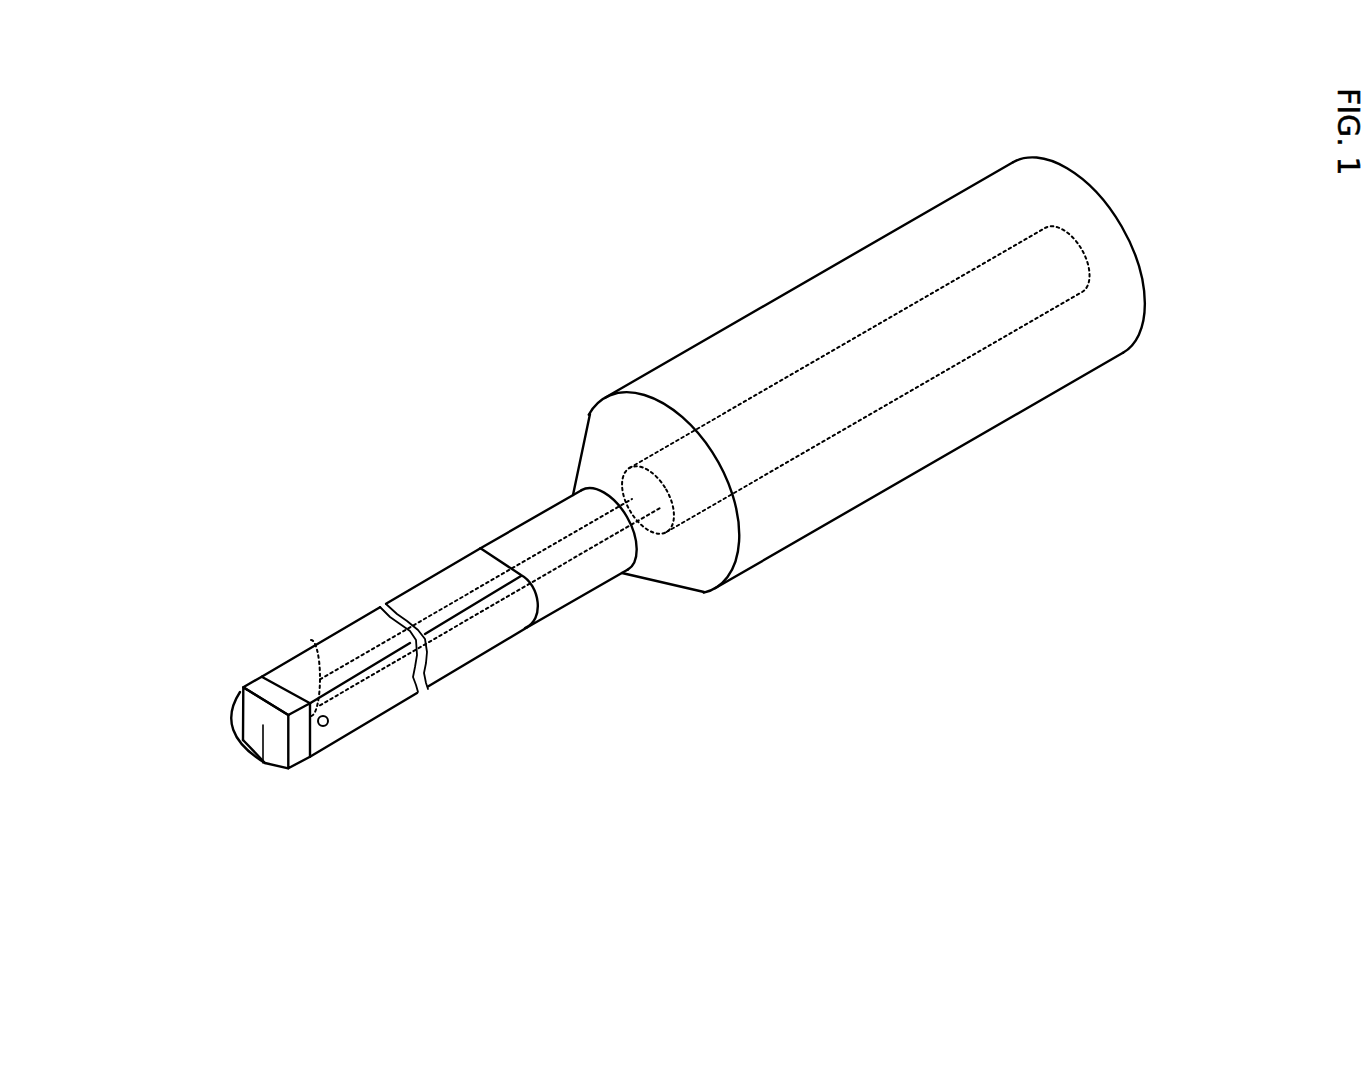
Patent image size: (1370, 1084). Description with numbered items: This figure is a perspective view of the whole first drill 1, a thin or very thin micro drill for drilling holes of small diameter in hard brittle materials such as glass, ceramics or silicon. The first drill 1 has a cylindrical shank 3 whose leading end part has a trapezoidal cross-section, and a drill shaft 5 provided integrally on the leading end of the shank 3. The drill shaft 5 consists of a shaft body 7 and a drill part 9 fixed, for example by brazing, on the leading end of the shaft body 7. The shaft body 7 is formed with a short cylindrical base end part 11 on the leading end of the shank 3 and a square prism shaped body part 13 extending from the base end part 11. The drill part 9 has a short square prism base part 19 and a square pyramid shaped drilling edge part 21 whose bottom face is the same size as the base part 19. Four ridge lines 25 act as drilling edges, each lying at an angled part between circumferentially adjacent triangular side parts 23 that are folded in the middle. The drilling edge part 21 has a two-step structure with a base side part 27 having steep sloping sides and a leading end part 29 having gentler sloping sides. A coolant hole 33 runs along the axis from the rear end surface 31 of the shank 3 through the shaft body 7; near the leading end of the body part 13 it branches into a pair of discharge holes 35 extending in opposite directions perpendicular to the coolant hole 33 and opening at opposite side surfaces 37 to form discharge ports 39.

The first drill 1 is at (360, 382).
The shank 3 is at (761, 418).
The drill shaft 5 is at (262, 601).
The shaft body 7 is at (497, 653).
The drill part 9 is at (250, 667).
The base end part 11 is at (550, 530).
The body part 13 is at (394, 625).
The base part 19 is at (253, 688).
The drilling edge part 21 is at (264, 779).
The triangular side parts 23 is at (247, 720).
The ridge lines 25 is at (247, 683).
The base side part 27 is at (248, 708).
The leading end part 29 is at (237, 743).
The rear end surface 31 is at (1120, 222).
The coolant hole 33 is at (775, 437).
The discharge holes 35 is at (313, 641).
The side surfaces 37 is at (360, 617).
The discharge ports 39 is at (330, 724).